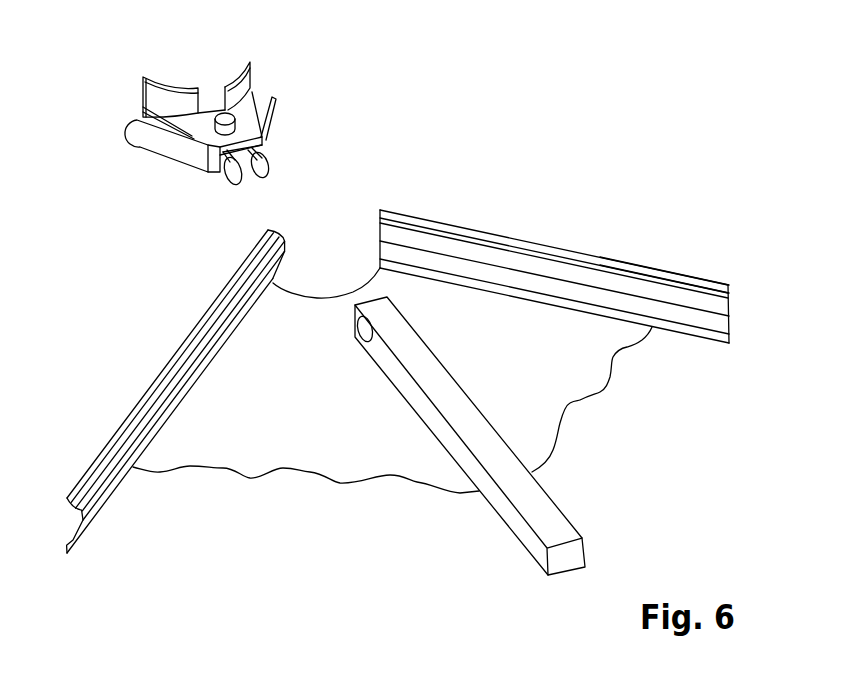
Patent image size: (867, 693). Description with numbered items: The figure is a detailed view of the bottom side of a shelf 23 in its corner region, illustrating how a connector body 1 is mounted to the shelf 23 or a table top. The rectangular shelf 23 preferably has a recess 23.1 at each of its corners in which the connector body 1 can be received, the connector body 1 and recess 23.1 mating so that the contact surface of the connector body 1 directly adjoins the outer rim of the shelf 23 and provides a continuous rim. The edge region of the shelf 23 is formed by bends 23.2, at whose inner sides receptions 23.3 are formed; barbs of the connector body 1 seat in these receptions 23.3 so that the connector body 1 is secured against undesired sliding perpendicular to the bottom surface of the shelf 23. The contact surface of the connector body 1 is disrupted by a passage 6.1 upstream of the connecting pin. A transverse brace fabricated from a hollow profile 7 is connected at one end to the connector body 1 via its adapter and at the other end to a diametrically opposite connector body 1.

The connector body 1 is at (290, 66).
The passage 6.1 is at (218, 106).
The hollow profile 7 is at (534, 508).
The shelf 23 is at (299, 422).
The recess 23.1 is at (346, 298).
The bends 23.2 is at (508, 262).
The receptions 23.3 is at (708, 322).